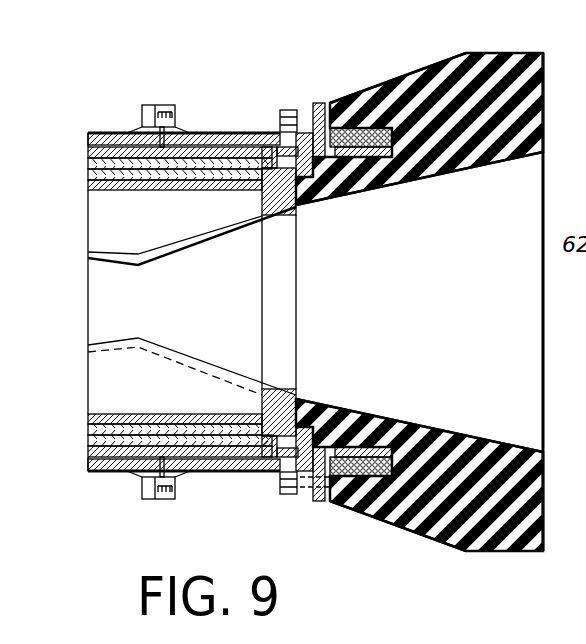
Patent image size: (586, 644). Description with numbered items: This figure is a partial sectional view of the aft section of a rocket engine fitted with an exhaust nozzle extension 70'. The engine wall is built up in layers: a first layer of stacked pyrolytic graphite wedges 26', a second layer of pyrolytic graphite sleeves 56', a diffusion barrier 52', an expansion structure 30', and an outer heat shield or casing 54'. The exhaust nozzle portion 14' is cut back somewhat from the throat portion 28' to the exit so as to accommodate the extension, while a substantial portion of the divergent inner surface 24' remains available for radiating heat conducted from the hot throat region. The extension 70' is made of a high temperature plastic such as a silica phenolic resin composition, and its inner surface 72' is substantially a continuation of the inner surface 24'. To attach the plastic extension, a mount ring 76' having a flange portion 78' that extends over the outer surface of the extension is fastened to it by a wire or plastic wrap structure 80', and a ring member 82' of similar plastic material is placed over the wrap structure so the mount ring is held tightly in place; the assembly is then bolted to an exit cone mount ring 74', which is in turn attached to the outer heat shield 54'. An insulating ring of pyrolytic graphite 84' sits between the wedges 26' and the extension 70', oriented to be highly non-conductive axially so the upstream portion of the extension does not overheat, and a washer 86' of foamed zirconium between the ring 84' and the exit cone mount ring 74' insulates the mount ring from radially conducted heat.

The exhaust nozzle portion 14' is at (231, 305).
The inner surface 24' is at (192, 301).
The stacked pyrolytic graphite wedges 26' is at (139, 217).
The throat portion 28' is at (139, 304).
The expansion structure 30' is at (151, 294).
The diffusion barrier 52' is at (146, 299).
The outer heat shield or casing 54' is at (63, 279).
The pyrolytic graphite sleeves 56' is at (132, 299).
The exhaust nozzle extension 70' is at (423, 284).
The inner surface 72' is at (419, 302).
The exit cone mount ring 74' is at (178, 297).
The mount ring 76' is at (329, 264).
The flange portion 78' is at (369, 302).
The wire or plastic wrap structure 80' is at (393, 302).
The ring member 82' is at (398, 290).
The insulating ring of pyrolytic graphite 84' is at (299, 302).
The washer 86' is at (292, 289).